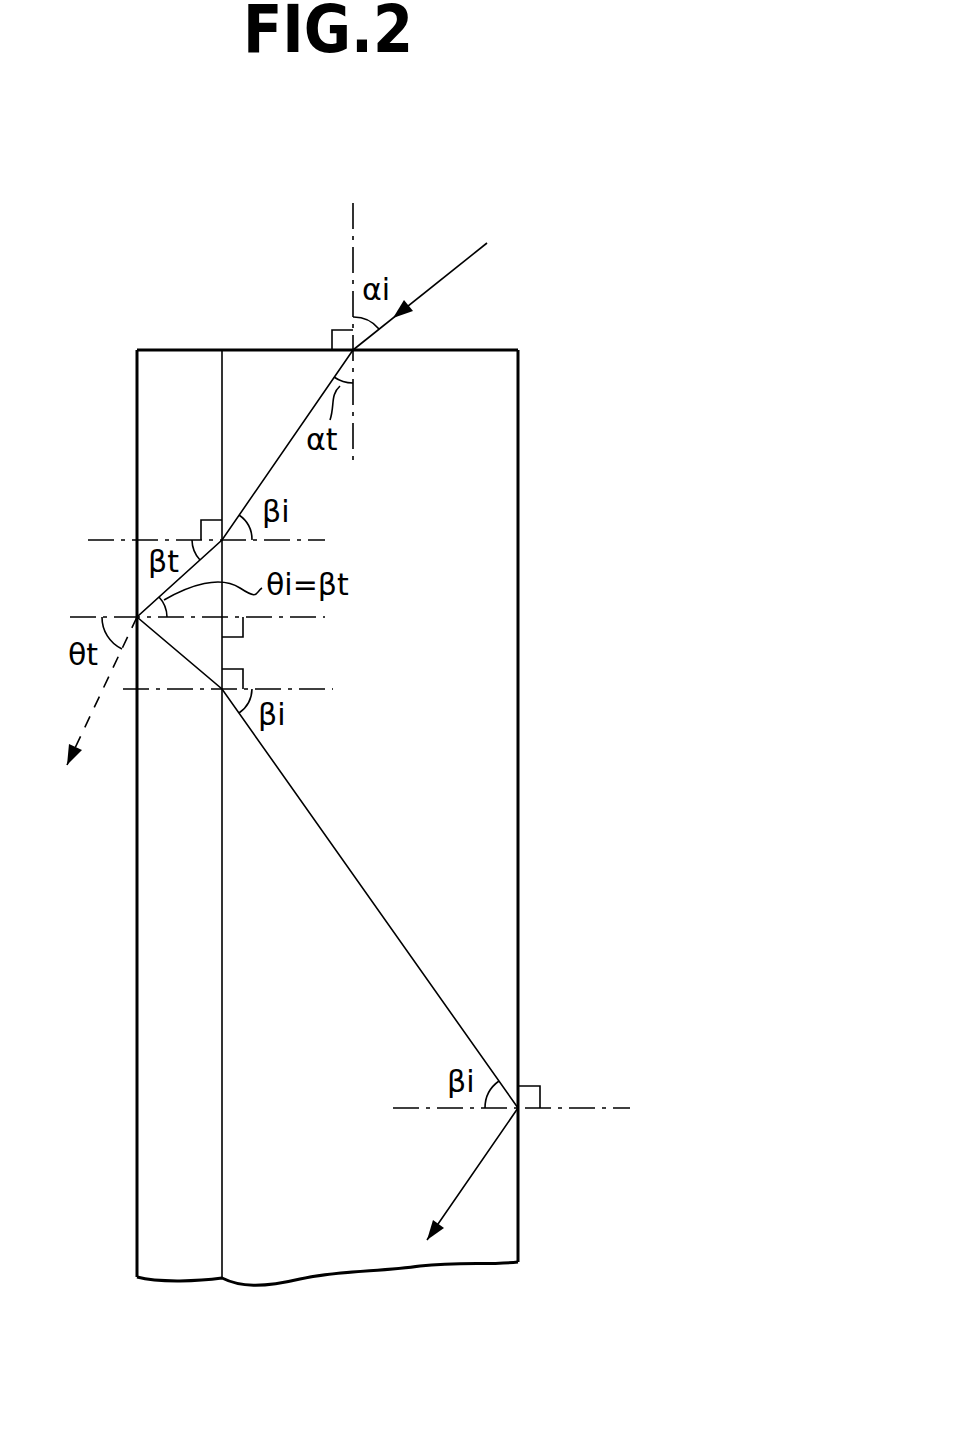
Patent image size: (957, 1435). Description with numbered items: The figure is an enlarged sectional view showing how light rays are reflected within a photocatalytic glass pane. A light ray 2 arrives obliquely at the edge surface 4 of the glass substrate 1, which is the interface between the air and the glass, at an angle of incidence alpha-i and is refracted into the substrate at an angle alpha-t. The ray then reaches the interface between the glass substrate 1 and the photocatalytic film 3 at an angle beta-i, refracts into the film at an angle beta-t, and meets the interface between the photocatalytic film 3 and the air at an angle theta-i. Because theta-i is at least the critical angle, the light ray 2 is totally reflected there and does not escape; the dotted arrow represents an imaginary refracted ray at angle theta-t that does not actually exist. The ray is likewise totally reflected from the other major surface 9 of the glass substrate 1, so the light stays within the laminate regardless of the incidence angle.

The glass substrate 1 is at (495, 496).
The light ray 2 is at (474, 257).
The photocatalytic film 3 is at (165, 390).
The edge surface 4 is at (480, 349).
The other major surface 9 is at (520, 868).